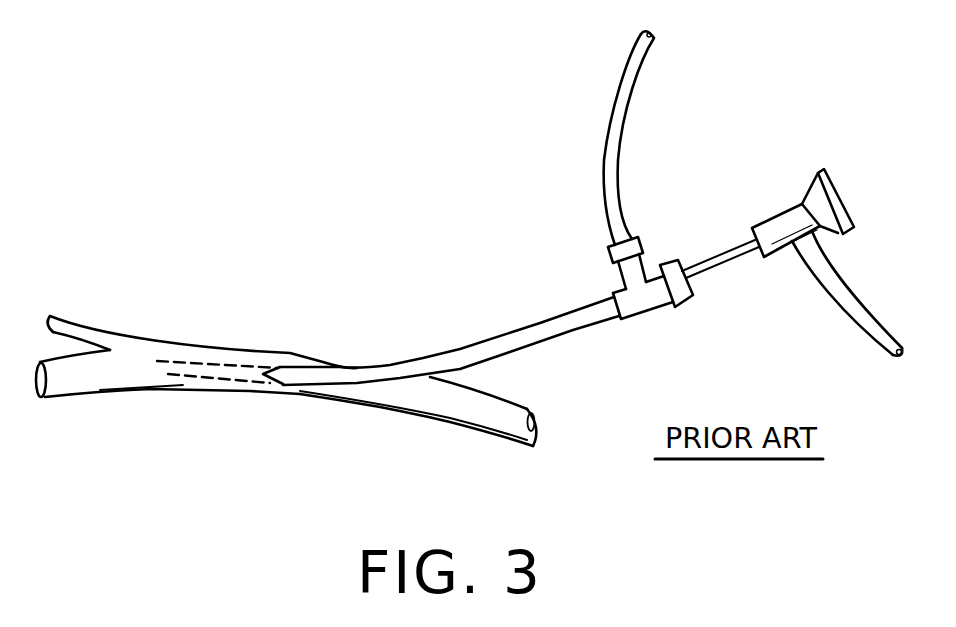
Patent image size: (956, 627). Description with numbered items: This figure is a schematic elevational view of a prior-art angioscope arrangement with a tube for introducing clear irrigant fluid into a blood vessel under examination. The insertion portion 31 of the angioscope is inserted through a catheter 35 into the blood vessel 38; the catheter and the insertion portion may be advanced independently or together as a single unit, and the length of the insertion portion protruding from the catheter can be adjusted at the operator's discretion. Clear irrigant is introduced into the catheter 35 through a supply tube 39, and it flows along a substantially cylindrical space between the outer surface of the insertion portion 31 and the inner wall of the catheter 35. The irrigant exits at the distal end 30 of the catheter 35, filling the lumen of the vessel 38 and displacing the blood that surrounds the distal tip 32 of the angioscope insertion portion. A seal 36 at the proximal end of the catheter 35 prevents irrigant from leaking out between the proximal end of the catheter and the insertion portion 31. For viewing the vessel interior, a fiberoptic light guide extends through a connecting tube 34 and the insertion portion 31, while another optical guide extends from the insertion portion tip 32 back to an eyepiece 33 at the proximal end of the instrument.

The distal end of catheter 30 is at (219, 378).
The insertion portion 31 is at (728, 262).
The distal tip 32 is at (154, 359).
The eyepiece 33 is at (836, 204).
The connecting tube 34 is at (847, 304).
The catheter 35 is at (470, 350).
The seal 36 is at (670, 262).
The blood vessel 38 is at (411, 401).
The supply tube 39 is at (604, 166).